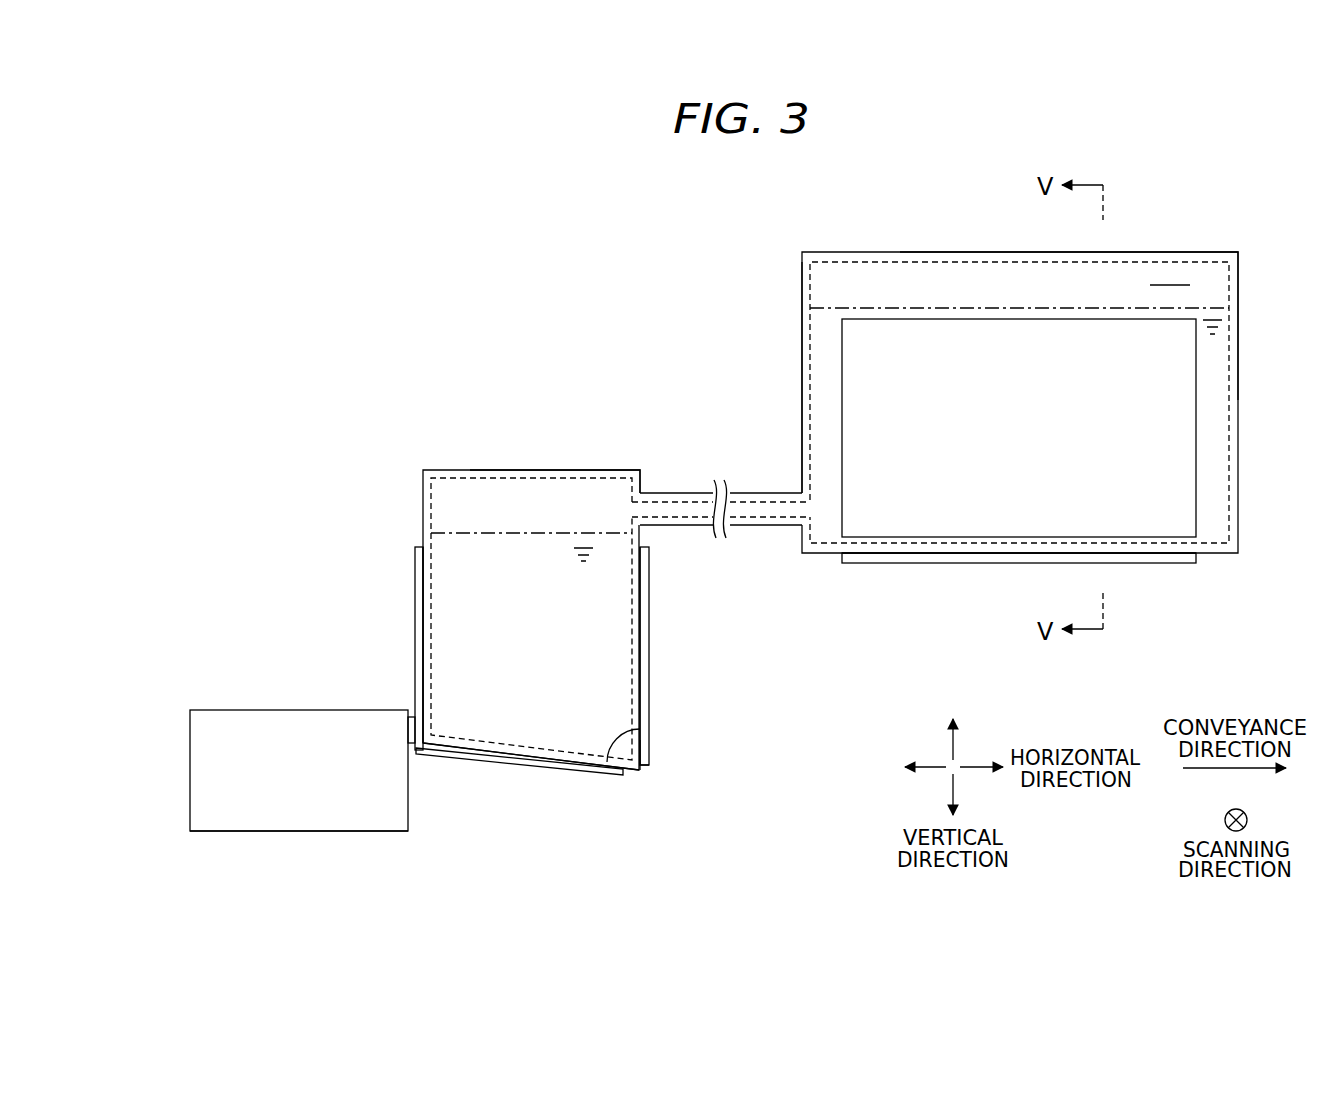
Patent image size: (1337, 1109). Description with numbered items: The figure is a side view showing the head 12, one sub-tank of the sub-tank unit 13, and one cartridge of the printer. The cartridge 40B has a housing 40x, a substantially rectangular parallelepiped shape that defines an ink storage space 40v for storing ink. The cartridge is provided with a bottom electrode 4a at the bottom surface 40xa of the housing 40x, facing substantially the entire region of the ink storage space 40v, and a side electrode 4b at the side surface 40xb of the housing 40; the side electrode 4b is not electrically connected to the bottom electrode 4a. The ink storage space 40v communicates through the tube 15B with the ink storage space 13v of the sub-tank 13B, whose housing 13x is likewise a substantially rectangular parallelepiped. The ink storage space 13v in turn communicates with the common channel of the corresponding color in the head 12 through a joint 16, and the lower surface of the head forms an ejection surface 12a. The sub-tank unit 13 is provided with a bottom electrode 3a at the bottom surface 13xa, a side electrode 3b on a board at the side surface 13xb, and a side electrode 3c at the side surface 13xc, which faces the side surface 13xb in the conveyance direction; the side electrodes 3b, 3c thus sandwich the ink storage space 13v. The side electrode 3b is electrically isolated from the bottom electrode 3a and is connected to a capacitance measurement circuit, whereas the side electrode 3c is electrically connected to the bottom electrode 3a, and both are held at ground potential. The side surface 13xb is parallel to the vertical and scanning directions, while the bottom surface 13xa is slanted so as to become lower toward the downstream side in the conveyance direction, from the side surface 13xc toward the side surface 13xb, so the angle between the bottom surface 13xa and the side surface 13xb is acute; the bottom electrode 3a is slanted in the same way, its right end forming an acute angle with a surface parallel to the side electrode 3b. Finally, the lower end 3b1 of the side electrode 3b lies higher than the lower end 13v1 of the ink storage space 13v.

The housing 40 is at (908, 208).
The cartridge 40B is at (993, 252).
The housing 40x is at (1195, 252).
The side surface 40xb is at (828, 293).
The ink storage space 40v is at (1200, 285).
The side electrode 4b is at (1183, 428).
The bottom electrode 4a is at (1196, 557).
The bottom surface 40xa is at (1018, 560).
The tube 15B is at (748, 493).
The sub-tank unit 13 is at (448, 430).
The sub-tank 13B is at (520, 478).
The ink storage space 13v is at (549, 500).
The housing 13x is at (600, 470).
The side surface 13xc is at (420, 578).
The side electrode 3c is at (418, 613).
The joint 16 is at (410, 716).
The head 12 is at (243, 728).
The ejection surface 12a is at (297, 831).
The bottom electrode 3a is at (508, 758).
The bottom surface 13xa is at (535, 760).
The side electrode 3b is at (648, 660).
The side surface 13xb is at (648, 607).
The lower end 3b1 is at (650, 752).
The lower end 13v1 is at (642, 760).